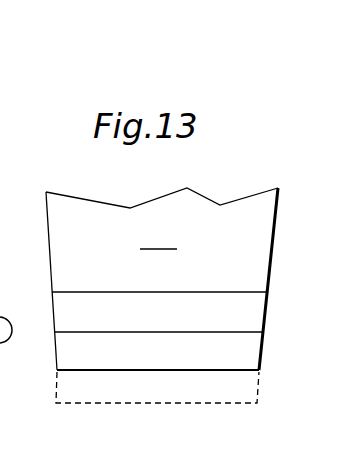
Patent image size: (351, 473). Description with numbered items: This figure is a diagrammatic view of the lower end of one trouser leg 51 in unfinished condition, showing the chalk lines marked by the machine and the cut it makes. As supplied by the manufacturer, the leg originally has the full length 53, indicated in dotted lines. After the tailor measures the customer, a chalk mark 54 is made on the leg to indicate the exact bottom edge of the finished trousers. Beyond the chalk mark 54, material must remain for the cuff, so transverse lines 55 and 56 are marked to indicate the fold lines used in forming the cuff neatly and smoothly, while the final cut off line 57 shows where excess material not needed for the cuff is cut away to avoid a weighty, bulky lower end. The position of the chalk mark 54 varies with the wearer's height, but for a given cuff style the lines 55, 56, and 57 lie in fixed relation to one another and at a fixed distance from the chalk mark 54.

The leg 51 is at (193, 205).
The full length 53 is at (135, 405).
The chalk mark 54 is at (155, 247).
The transverse line 55 is at (107, 291).
The transverse line 56 is at (124, 331).
The final cut off line 57 is at (137, 369).